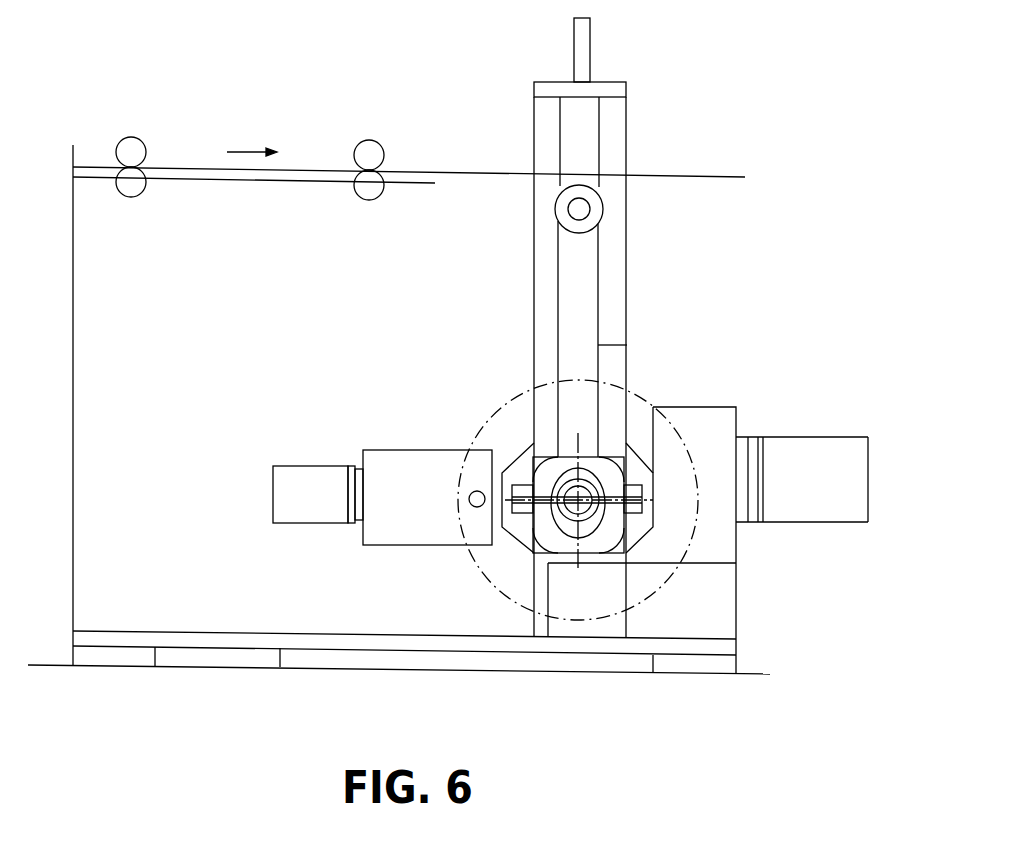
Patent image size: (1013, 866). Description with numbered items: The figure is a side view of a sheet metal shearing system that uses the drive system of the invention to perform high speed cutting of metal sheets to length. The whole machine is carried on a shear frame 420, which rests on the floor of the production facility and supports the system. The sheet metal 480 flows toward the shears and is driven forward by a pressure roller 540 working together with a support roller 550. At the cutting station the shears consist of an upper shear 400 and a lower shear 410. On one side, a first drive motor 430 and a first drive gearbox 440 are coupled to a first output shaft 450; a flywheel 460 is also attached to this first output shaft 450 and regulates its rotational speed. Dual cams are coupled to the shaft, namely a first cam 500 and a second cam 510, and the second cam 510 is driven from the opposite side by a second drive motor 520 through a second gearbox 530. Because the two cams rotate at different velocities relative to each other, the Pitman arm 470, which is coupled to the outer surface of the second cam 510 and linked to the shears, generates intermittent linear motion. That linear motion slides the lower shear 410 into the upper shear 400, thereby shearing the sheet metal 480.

The upper shear 400 is at (592, 135).
The lower shear 410 is at (585, 252).
The shear frame 420 is at (280, 667).
The first drive motor 430 is at (795, 437).
The first drive gearbox 440 is at (698, 407).
The first output shaft 450 is at (578, 508).
The flywheel 460 is at (510, 398).
The Pitman arm 470 is at (627, 345).
The sheet metal 480 is at (187, 167).
The first cam 500 is at (563, 510).
The second cam 510 is at (600, 525).
The second drive motor 520 is at (308, 466).
The second gearbox 530 is at (410, 450).
The pressure roller 540 is at (131, 137).
The support roller 550 is at (121, 197).